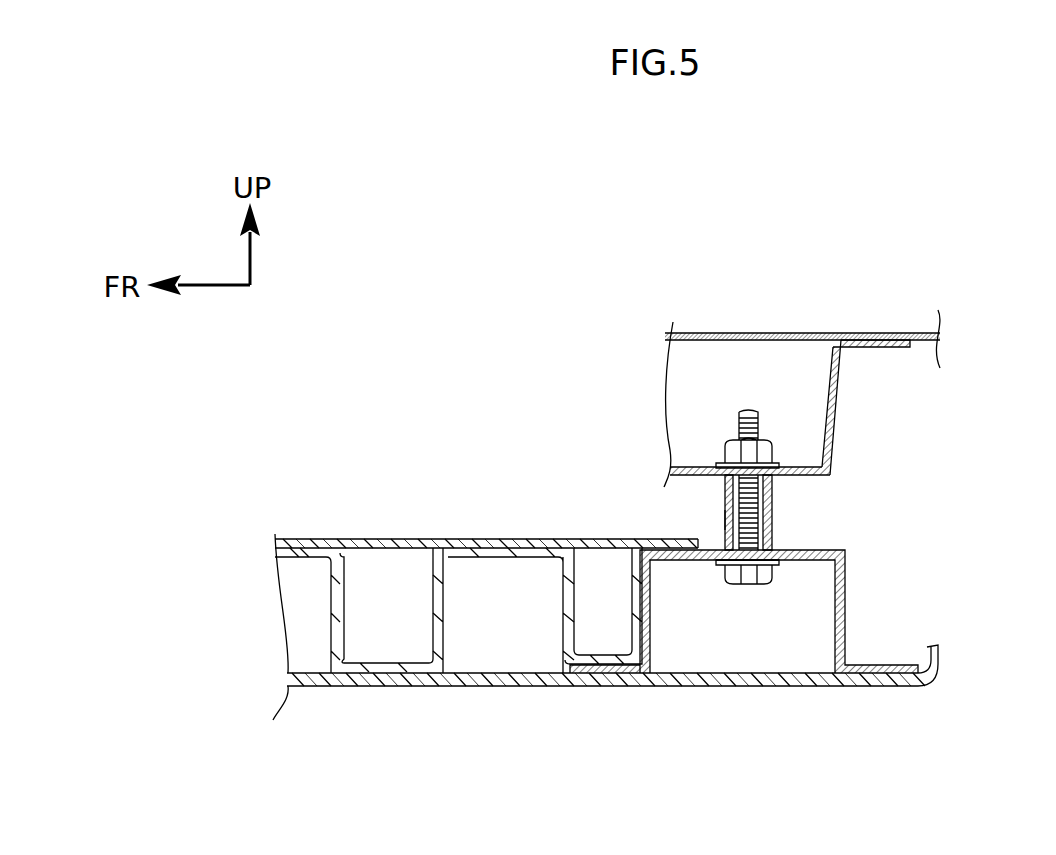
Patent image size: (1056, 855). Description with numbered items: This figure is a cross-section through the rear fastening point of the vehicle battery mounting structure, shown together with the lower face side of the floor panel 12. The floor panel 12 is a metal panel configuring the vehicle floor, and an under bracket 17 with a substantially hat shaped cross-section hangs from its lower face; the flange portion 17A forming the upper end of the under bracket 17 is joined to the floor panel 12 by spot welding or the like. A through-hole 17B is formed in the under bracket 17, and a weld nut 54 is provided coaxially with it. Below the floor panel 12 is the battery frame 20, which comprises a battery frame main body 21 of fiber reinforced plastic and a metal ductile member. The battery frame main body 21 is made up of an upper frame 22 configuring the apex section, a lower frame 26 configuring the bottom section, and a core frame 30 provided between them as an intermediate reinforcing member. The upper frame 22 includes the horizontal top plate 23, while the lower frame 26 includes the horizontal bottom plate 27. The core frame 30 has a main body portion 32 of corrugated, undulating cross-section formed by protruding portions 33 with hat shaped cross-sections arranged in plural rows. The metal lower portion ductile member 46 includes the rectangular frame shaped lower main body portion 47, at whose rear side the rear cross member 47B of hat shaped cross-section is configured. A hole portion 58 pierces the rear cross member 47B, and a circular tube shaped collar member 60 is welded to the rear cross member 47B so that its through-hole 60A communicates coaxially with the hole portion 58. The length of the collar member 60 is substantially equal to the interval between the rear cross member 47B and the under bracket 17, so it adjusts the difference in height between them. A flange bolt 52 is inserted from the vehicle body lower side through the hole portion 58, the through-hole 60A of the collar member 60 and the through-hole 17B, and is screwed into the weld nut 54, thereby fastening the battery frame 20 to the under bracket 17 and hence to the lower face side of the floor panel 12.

The floor panel 12 is at (728, 333).
The under bracket 17 is at (842, 410).
The flange portion 17A is at (894, 343).
The through-hole 17B is at (723, 452).
The battery frame 20 is at (335, 697).
The battery frame main body 21 is at (292, 534).
The upper frame 22 is at (355, 536).
The top plate 23 is at (480, 539).
The lower frame 26 is at (497, 689).
The bottom plate 27 is at (657, 686).
The core frame 30 is at (327, 603).
The main body portion 32 is at (601, 651).
The protruding portion 33 is at (517, 548).
The lower portion ductile member 46 is at (849, 637).
The lower main body portion 47 is at (849, 592).
The rear cross member 47B is at (836, 552).
The flange bolt 52 is at (748, 585).
The weld nut 54 is at (768, 448).
The hole portion 58 is at (723, 570).
The collar member 60 is at (774, 507).
The through-hole 60A is at (724, 516).